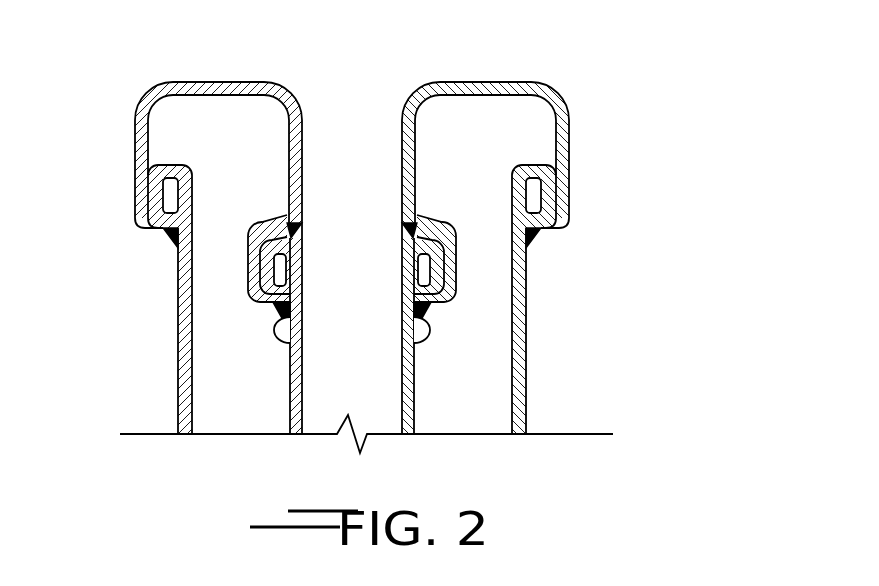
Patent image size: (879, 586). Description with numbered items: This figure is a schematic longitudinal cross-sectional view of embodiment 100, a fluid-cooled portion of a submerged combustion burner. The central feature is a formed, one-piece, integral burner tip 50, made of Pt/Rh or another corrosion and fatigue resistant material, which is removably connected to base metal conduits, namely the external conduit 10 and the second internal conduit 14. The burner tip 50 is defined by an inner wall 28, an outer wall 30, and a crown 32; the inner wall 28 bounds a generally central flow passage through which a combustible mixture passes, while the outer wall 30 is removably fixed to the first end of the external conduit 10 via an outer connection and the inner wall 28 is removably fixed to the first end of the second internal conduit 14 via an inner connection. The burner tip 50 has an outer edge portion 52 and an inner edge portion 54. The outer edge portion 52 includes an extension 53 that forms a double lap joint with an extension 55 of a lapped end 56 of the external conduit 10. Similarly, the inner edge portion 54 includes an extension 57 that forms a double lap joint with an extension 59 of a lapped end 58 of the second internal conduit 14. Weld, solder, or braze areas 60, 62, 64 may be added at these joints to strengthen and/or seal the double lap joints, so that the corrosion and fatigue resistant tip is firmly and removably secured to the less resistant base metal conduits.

The embodiment 100 is at (655, 108).
The external conduit 10 is at (178, 393).
The second internal conduit 14 is at (289, 391).
The inner wall 28 is at (402, 152).
The outer wall 30 is at (135, 147).
The crown 32 is at (205, 82).
The burner tip 50 is at (143, 102).
The outer edge portion 52 is at (153, 232).
The extension 53 is at (177, 203).
The inner edge portion 54 is at (262, 299).
The extension 55 is at (155, 198).
The lapped end 56 is at (167, 165).
The extension 57 is at (290, 278).
The lapped end 58 is at (403, 262).
The extension 59 is at (268, 264).
The weld, solder, or braze area 60 is at (403, 232).
The weld, solder, or braze area 62 is at (163, 236).
The weld, solder, or braze area 64 is at (406, 346).